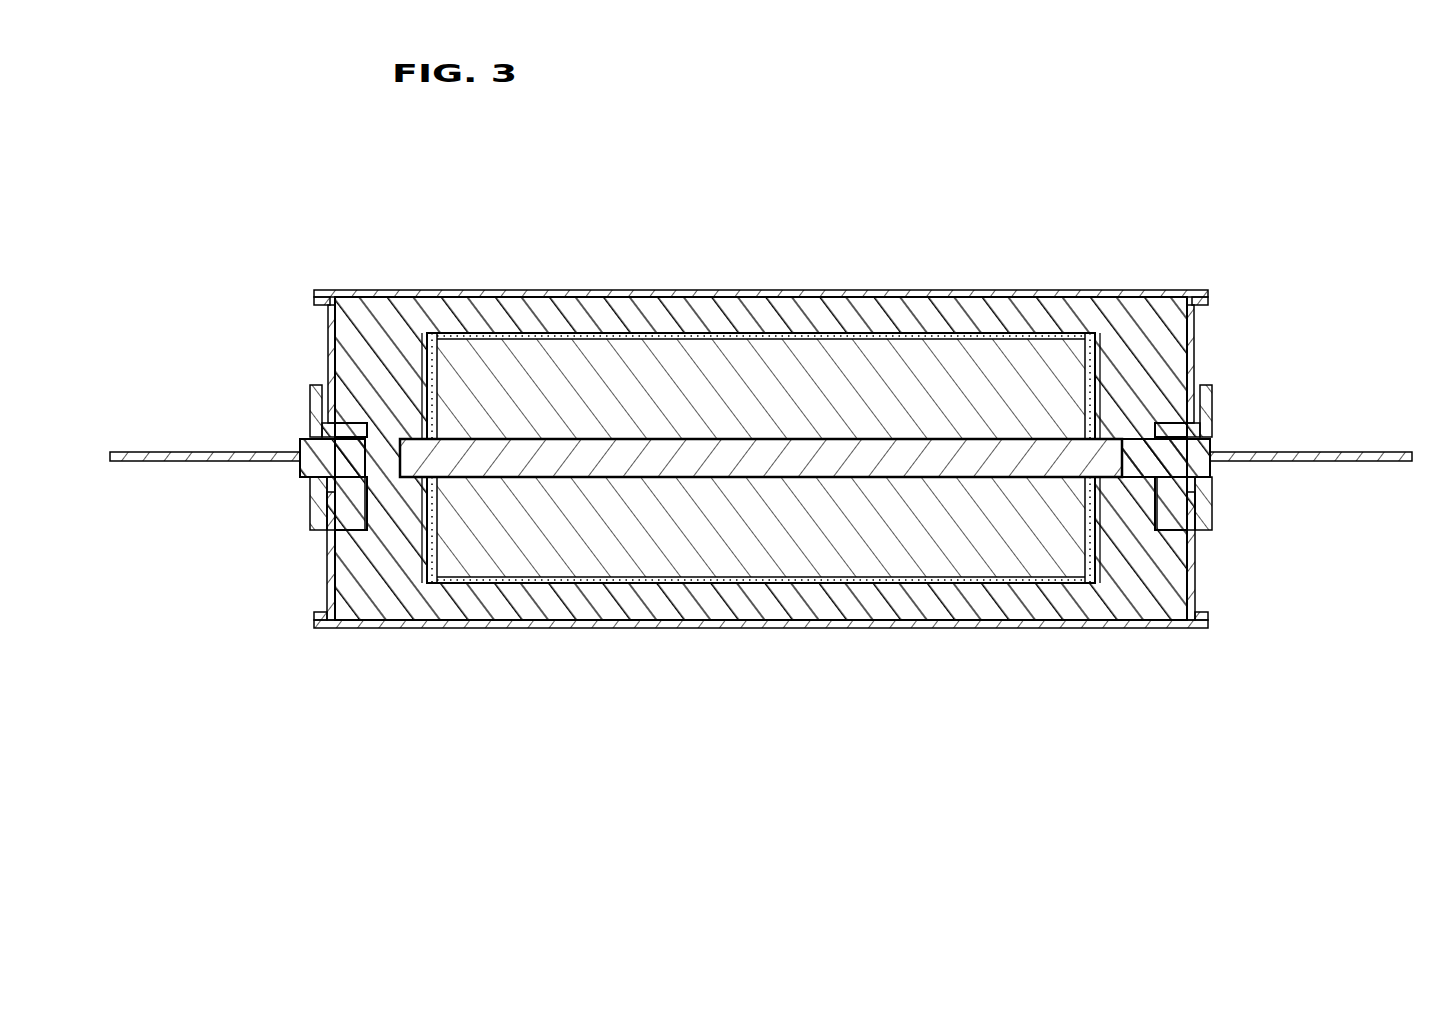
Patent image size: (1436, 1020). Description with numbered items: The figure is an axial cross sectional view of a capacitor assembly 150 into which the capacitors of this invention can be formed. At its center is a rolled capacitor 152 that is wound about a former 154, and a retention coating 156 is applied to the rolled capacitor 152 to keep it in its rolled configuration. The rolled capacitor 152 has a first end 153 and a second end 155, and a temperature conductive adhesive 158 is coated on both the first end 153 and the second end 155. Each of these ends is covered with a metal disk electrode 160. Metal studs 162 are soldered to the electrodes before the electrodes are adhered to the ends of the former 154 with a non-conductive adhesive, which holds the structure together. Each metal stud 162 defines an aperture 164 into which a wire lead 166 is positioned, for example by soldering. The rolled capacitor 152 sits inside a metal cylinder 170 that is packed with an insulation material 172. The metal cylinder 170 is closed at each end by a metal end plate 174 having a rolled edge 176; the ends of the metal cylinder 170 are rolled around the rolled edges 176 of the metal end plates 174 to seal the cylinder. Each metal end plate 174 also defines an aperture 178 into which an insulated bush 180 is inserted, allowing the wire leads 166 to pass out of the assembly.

The capacitor assembly 150 is at (316, 206).
The rolled capacitor 152 is at (930, 385).
The first end 153 is at (447, 383).
The former 154 is at (818, 447).
The second end 155 is at (1078, 390).
The retention coating 156 is at (652, 333).
The temperature conductive adhesive 158 is at (437, 333).
The metal disk electrode 160 is at (427, 583).
The metal stud 162 is at (294, 472).
The aperture 164 is at (326, 432).
The wire lead 166 is at (149, 452).
The metal cylinder 170 is at (975, 628).
The insulation material 172 is at (350, 317).
The metal end plate 174 is at (331, 363).
The rolled edge 176 is at (308, 615).
The aperture 178 is at (318, 497).
The insulated bush 180 is at (310, 527).